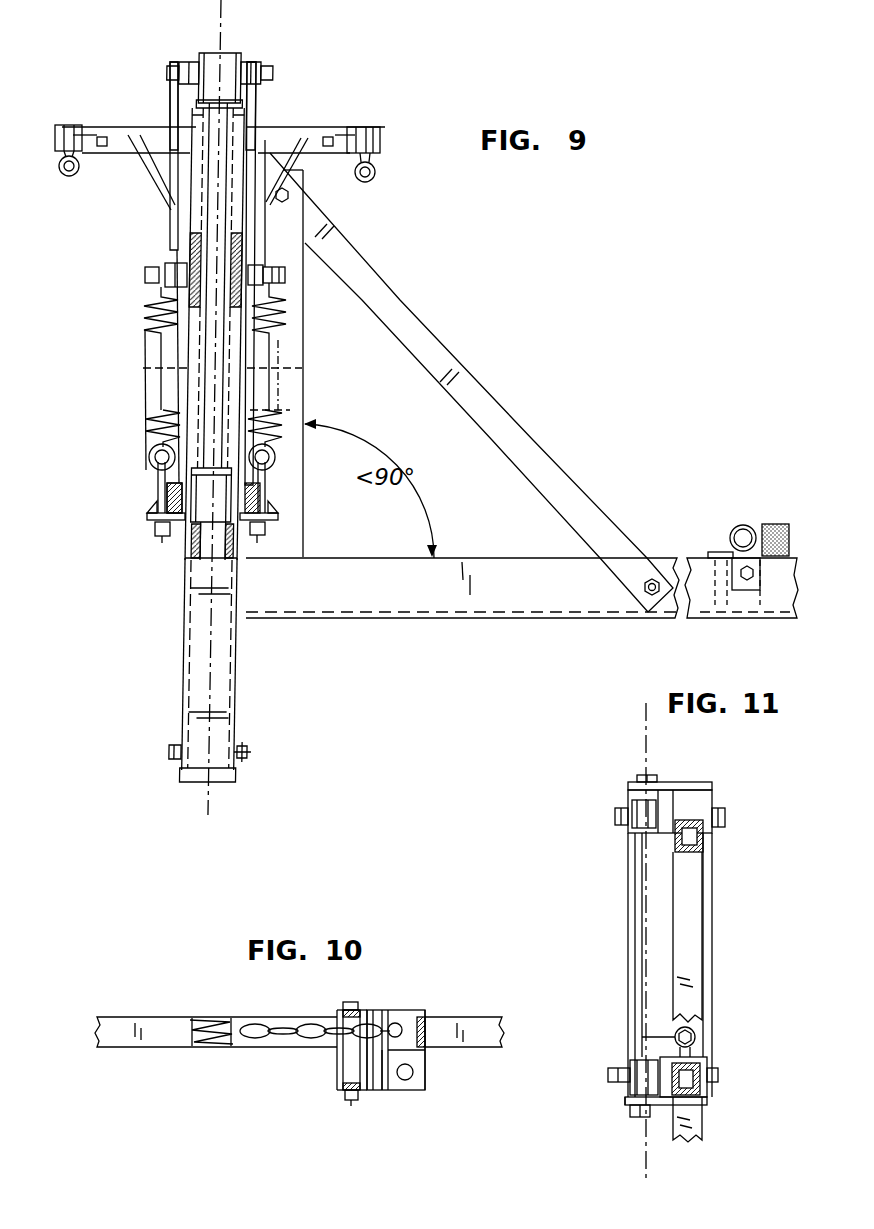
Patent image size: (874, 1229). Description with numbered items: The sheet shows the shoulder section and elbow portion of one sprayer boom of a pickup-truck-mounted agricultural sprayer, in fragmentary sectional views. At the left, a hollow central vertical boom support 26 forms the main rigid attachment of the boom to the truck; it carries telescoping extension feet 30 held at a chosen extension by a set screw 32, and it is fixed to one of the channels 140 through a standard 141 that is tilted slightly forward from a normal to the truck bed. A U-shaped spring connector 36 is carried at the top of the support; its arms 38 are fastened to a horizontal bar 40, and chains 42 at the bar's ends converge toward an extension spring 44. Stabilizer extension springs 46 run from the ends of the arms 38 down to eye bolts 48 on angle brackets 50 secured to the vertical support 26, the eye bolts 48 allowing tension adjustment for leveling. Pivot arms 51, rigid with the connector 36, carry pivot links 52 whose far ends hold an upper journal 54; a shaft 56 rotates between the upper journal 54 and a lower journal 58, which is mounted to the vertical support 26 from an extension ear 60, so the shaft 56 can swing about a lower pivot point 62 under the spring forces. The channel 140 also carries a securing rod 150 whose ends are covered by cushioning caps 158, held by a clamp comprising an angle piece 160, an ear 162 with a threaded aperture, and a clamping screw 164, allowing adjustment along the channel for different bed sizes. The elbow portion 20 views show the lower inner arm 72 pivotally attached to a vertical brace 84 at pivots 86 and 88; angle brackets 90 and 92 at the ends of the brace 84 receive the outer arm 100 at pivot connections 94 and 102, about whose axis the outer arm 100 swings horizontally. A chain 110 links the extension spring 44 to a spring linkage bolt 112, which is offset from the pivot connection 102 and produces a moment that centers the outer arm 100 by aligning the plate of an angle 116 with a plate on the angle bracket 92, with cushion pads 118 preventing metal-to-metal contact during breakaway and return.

In FIG. 10, the elbow portion 20 is at (429, 1005).
In FIG. 11, the elbow portion 20 is at (615, 1103).
In FIG. 9, the central vertical boom support 26 is at (192, 653).
In FIG. 9, the extension feet 30 is at (185, 783).
In FIG. 9, the set screw 32 is at (168, 755).
In FIG. 9, the U-shaped spring connector 36 is at (162, 217).
In FIG. 9, the arms 38 is at (169, 235).
In FIG. 9, the horizontal bar 40 is at (110, 126).
In FIG. 9, the chains 42 is at (63, 170).
In FIG. 10, the extension spring 44 is at (210, 1020).
In FIG. 11, the extension spring 44 is at (672, 1037).
In FIG. 9, the stabilizer extension springs 46 is at (153, 322).
In FIG. 9, the eye bolts 48 is at (177, 482).
In FIG. 9, the angle brackets 50 is at (163, 520).
In FIG. 9, the pivot arms 51 is at (176, 98).
In FIG. 9, the pivot links 52 is at (203, 58).
In FIG. 9, the upper journal 54 is at (223, 67).
In FIG. 9, the shaft 56 is at (212, 352).
In FIG. 9, the lower journal 58 is at (202, 508).
In FIG. 9, the extension ear 60 is at (157, 476).
In FIG. 9, the lower pivot point 62 is at (165, 496).
In FIG. 10, the lower inner arm 72 is at (130, 1027).
In FIG. 11, the lower inner arm 72 is at (690, 1128).
In FIG. 10, the vertical brace 84 is at (343, 1010).
In FIG. 11, the vertical brace 84 is at (628, 993).
In FIG. 11, the pivot 86 is at (641, 811).
In FIG. 10, the pivot 88 is at (350, 1104).
In FIG. 11, the pivot 88 is at (631, 1085).
In FIG. 11, the angle bracket 90 is at (663, 783).
In FIG. 10, the angle bracket 92 is at (375, 1090).
In FIG. 11, the angle bracket 92 is at (625, 1110).
In FIG. 11, the pivot connection 94 is at (640, 777).
In FIG. 10, the outer arm 100 is at (493, 1027).
In FIG. 11, the outer arm 100 is at (712, 850).
In FIG. 10, the pivot connection 102 is at (410, 1078).
In FIG. 11, the pivot connection 102 is at (637, 1117).
In FIG. 10, the chain 110 is at (265, 1023).
In FIG. 10, the spring linkage bolt 112 is at (400, 1025).
In FIG. 11, the spring linkage bolt 112 is at (697, 1036).
In FIG. 10, the angle 116 is at (390, 1090).
In FIG. 11, the angle 116 is at (660, 1070).
In FIG. 10, the cushion pads 118 is at (380, 1010).
In FIG. 9, the channels 140 is at (457, 603).
In FIG. 9, the standards 141 is at (290, 408).
In FIG. 9, the securing rod 150 is at (752, 523).
In FIG. 9, the cushioning caps 158 is at (733, 525).
In FIG. 9, the angle piece 160 is at (717, 553).
In FIG. 9, the ear 162 is at (737, 590).
In FIG. 9, the clamping screw 164 is at (750, 580).